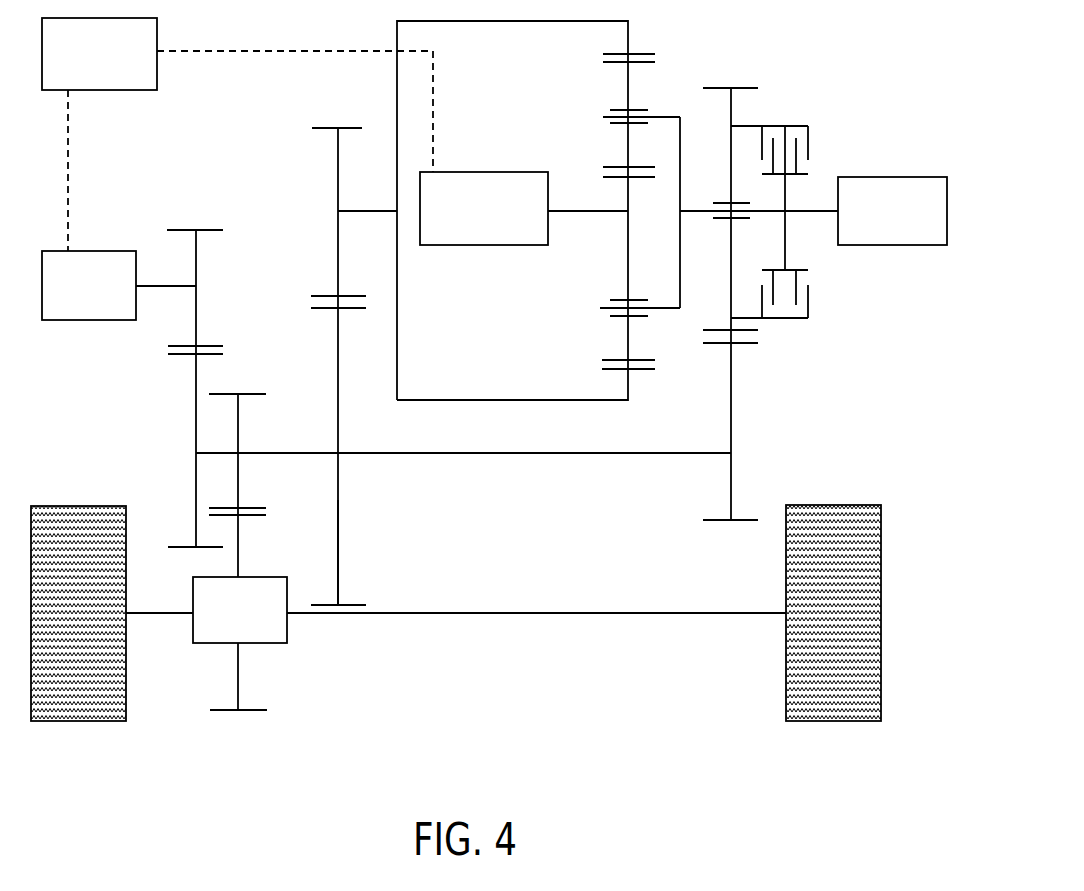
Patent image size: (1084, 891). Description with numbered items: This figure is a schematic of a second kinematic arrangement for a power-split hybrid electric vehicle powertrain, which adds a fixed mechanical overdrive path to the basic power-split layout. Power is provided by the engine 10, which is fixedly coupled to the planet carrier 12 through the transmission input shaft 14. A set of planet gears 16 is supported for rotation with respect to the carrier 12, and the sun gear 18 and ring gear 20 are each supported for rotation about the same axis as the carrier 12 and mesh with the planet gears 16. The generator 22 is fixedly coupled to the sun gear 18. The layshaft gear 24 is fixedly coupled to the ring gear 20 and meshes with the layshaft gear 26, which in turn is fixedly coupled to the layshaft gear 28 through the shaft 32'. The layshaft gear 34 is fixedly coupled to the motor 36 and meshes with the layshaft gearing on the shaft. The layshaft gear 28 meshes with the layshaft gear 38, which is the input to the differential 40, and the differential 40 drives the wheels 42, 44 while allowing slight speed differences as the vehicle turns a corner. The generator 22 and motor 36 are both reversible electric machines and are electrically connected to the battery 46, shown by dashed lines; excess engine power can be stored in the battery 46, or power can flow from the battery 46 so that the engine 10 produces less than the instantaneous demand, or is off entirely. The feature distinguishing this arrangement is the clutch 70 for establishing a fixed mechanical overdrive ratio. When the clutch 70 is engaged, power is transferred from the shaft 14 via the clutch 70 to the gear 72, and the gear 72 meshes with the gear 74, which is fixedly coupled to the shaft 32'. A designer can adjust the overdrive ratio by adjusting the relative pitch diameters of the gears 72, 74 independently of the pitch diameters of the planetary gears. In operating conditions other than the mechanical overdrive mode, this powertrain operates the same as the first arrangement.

The engine 10 is at (900, 176).
The planet carrier 12 is at (681, 268).
The transmission input shaft 14 is at (694, 210).
The planet gears 16 is at (626, 333).
The sun gear 18 is at (627, 201).
The ring gear 20 is at (630, 385).
The generator 22 is at (500, 171).
The layshaft gear 24 is at (337, 167).
The layshaft gear 26 is at (340, 542).
The layshaft gear 28 is at (194, 392).
The shaft 32' is at (463, 483).
The layshaft gear 34 is at (197, 258).
The motor 36 is at (99, 250).
The layshaft gear 38 is at (240, 674).
The differential 40 is at (289, 640).
The wheel 42 is at (82, 505).
The wheel 44 is at (785, 628).
The battery 46 is at (147, 92).
The clutch 70 is at (790, 125).
The gear 72 is at (729, 111).
The gear 74 is at (733, 437).